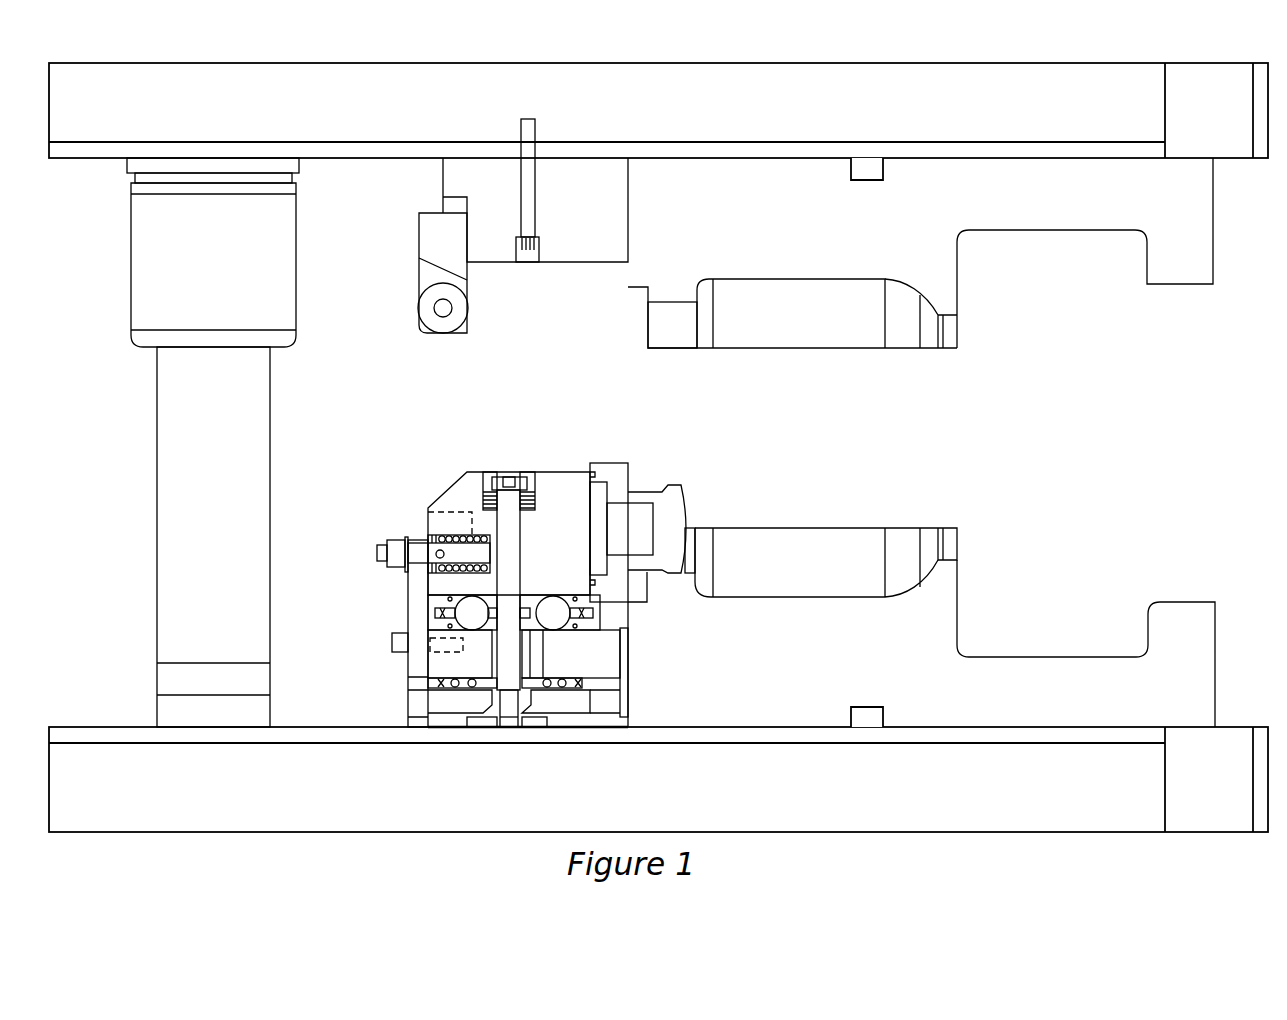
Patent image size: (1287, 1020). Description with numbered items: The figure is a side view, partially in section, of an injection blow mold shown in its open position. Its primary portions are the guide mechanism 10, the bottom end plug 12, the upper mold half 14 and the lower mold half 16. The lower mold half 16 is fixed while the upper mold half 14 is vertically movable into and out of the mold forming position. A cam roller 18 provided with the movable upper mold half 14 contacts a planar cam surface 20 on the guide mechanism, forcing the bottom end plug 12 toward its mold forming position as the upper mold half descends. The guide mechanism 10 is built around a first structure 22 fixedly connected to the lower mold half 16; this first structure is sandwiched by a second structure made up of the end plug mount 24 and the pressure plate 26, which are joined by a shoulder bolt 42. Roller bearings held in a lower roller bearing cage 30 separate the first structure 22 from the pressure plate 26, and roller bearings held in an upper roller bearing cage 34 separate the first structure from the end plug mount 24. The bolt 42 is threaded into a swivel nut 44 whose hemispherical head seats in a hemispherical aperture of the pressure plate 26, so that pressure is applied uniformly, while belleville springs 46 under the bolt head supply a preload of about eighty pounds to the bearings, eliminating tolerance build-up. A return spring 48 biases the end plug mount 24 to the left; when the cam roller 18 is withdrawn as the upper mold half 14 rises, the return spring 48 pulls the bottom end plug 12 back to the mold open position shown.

The guide mechanism 10 is at (470, 593).
The bottom end plug 12 is at (692, 503).
The upper mold half 14 is at (855, 350).
The lower mold half 16 is at (850, 528).
The cam roller 18 is at (470, 324).
The cam surface 20 is at (451, 485).
The first structure 22 is at (443, 665).
The end plug mount 24 is at (565, 485).
The pressure plate 26 is at (565, 703).
The lower roller bearing cage 30 is at (426, 684).
The upper roller bearing cage 34 is at (429, 604).
The bolt 42 is at (522, 556).
The swivel nut 44 is at (492, 717).
The belleville springs 46 is at (534, 490).
The return spring 48 is at (452, 545).